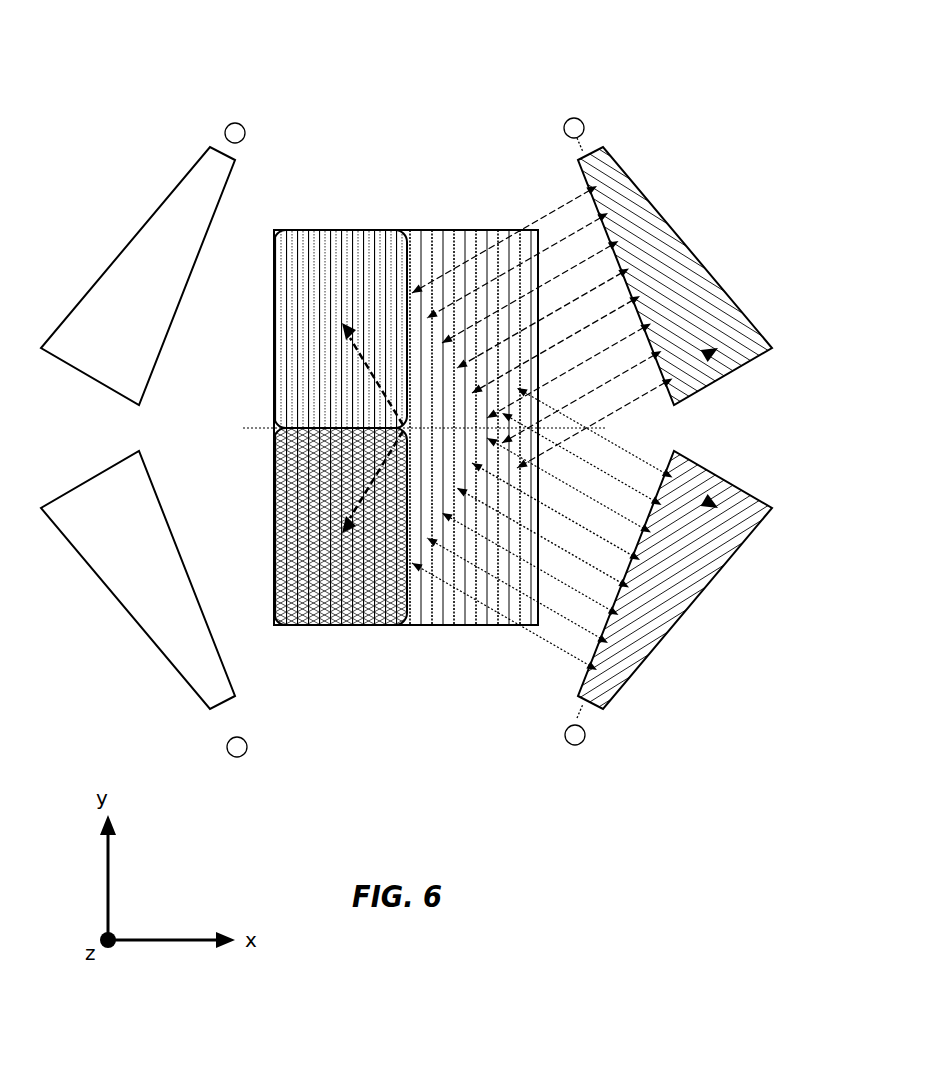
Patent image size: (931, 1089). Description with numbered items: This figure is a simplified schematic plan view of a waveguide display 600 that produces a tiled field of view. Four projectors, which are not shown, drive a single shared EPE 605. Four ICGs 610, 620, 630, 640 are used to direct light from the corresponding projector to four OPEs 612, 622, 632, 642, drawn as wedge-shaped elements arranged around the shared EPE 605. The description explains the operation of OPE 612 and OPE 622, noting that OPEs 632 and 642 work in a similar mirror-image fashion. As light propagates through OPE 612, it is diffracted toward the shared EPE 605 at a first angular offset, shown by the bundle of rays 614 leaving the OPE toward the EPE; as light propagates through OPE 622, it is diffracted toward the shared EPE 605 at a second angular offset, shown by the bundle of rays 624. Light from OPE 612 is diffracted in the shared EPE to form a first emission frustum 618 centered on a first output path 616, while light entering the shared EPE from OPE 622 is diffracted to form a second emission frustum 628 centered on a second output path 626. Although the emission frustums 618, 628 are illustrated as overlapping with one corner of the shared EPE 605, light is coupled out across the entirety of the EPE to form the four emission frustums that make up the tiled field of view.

The display system 600 is at (158, 38).
The shared EPE 605 is at (423, 627).
The ICG 610 is at (586, 735).
The OPE 612 is at (696, 614).
The light rays from lower wedge 614 is at (542, 648).
The first output path 616 is at (405, 424).
The first emission frustum 618 is at (326, 256).
The ICG 620 is at (585, 128).
The OPE 622 is at (672, 228).
The light rays from upper wedge 624 is at (545, 218).
The second output path 626 is at (405, 434).
The second emission frustum 628 is at (318, 600).
The ICG 630 is at (248, 747).
The OPE 632 is at (141, 546).
The ICG 640 is at (246, 133).
The OPE 642 is at (142, 311).